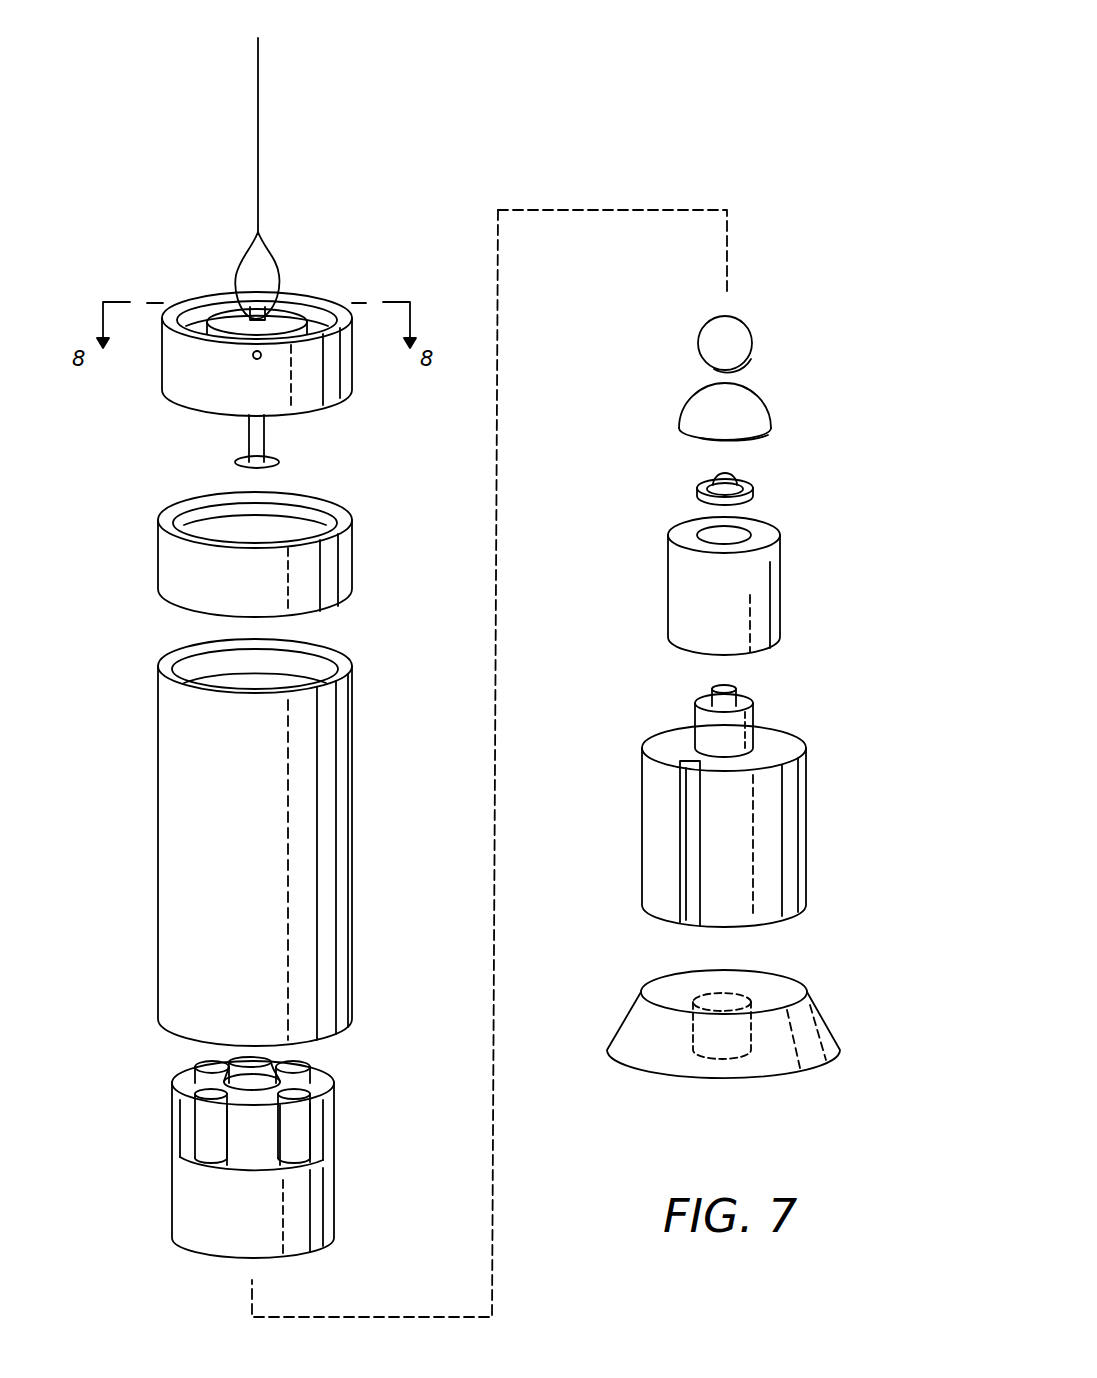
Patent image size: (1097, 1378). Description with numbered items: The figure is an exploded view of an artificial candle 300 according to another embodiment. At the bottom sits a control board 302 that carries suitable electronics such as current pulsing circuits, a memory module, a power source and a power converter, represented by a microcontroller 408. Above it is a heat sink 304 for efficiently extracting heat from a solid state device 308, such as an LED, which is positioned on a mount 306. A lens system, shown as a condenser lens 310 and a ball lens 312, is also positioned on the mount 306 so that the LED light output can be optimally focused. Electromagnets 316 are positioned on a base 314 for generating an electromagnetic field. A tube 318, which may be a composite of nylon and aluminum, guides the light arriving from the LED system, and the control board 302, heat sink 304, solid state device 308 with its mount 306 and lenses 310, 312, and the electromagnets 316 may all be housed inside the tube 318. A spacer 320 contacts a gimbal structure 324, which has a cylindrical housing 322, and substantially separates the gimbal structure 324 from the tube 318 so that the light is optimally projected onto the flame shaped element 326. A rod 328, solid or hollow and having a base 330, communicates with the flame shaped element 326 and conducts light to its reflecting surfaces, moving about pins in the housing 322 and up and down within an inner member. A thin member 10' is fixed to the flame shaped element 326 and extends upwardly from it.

The artificial candle 300 is at (697, 66).
The thin member 10' is at (315, 135).
The gimbal structure 324 is at (206, 284).
The flame shaped element 326 is at (263, 264).
The cylindrical housing 322 is at (353, 358).
The rod 328 is at (265, 434).
The base 330 is at (240, 463).
The spacer 320 is at (352, 557).
The tube 318 is at (353, 843).
The electromagnets 316 is at (217, 1125).
The base 314 is at (319, 1157).
The ball lens 312 is at (700, 332).
The condenser lens 310 is at (683, 408).
The solid state device 308 is at (697, 488).
The mount 306 is at (668, 583).
The heat sink 304 is at (642, 825).
The control board 302 is at (696, 1040).
The microcontroller 408 is at (712, 1045).